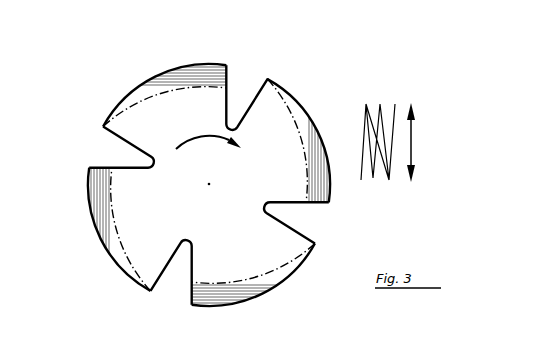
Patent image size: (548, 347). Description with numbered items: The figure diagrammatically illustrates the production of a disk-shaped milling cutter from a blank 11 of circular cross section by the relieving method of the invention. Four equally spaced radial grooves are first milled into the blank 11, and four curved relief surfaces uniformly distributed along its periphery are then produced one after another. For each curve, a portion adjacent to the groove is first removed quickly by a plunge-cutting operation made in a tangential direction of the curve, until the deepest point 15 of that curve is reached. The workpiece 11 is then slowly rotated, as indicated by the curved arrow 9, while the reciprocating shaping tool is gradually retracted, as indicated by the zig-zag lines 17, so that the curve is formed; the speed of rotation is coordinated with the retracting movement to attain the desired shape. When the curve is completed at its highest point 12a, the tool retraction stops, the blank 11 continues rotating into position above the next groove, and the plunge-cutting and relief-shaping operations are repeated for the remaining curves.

The direction of rotation arrow 9 is at (199, 134).
The blank 11 is at (313, 125).
The highest point of the curve 12a is at (268, 79).
The deepest point of the curve 15 is at (310, 203).
The zig-zag lines 17 is at (375, 163).